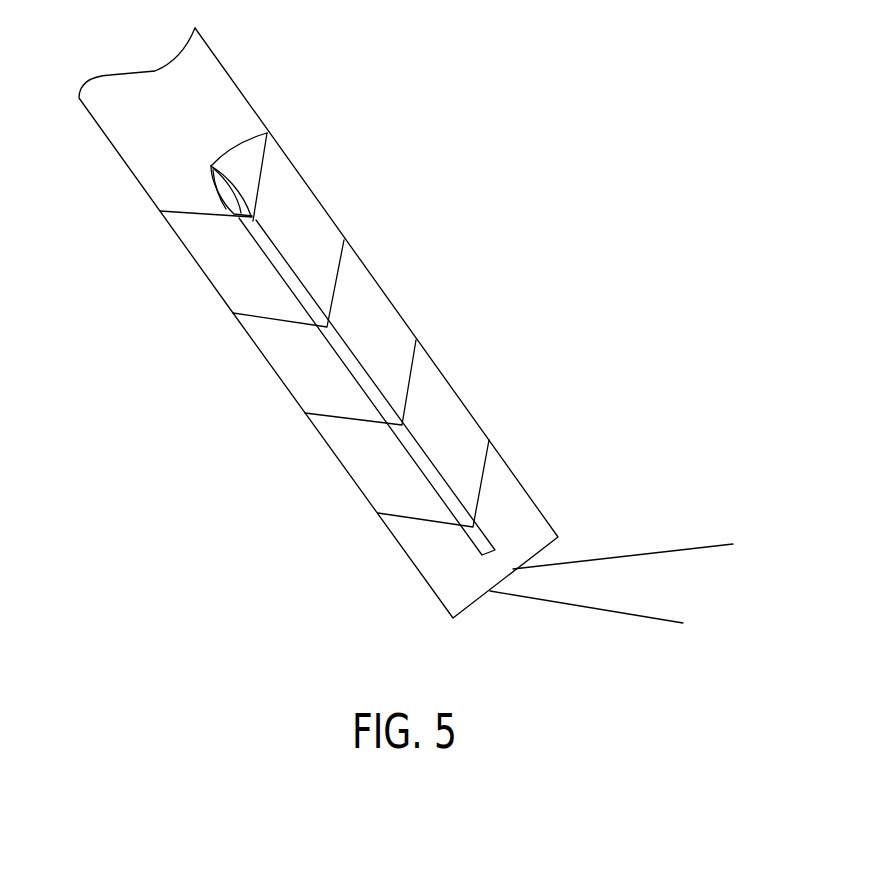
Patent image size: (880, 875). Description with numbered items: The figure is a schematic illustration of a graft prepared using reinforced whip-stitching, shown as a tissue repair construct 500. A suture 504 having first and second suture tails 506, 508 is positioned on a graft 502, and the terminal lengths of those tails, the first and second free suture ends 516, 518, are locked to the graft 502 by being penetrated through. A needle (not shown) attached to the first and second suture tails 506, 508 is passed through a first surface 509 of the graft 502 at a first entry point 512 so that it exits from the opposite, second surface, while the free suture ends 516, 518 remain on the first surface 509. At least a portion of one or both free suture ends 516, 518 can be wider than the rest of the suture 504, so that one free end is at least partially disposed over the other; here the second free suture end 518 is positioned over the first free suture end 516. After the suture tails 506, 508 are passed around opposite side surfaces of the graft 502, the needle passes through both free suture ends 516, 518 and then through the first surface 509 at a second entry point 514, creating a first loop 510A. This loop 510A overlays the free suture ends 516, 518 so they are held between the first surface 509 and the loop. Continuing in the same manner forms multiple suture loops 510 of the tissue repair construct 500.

The tissue repair construct 500 is at (455, 99).
The graft 502 is at (212, 73).
The suture 504 is at (716, 517).
The first suture tail 506 is at (645, 550).
The second suture tail 508 is at (595, 608).
The first surface 509 is at (142, 177).
The suture loops 510 is at (378, 228).
The first loop 510A is at (261, 172).
The first entry point 512 is at (268, 134).
The second entry point 514 is at (273, 223).
The first free suture end 516 is at (254, 203).
The second free suture end 518 is at (232, 215).